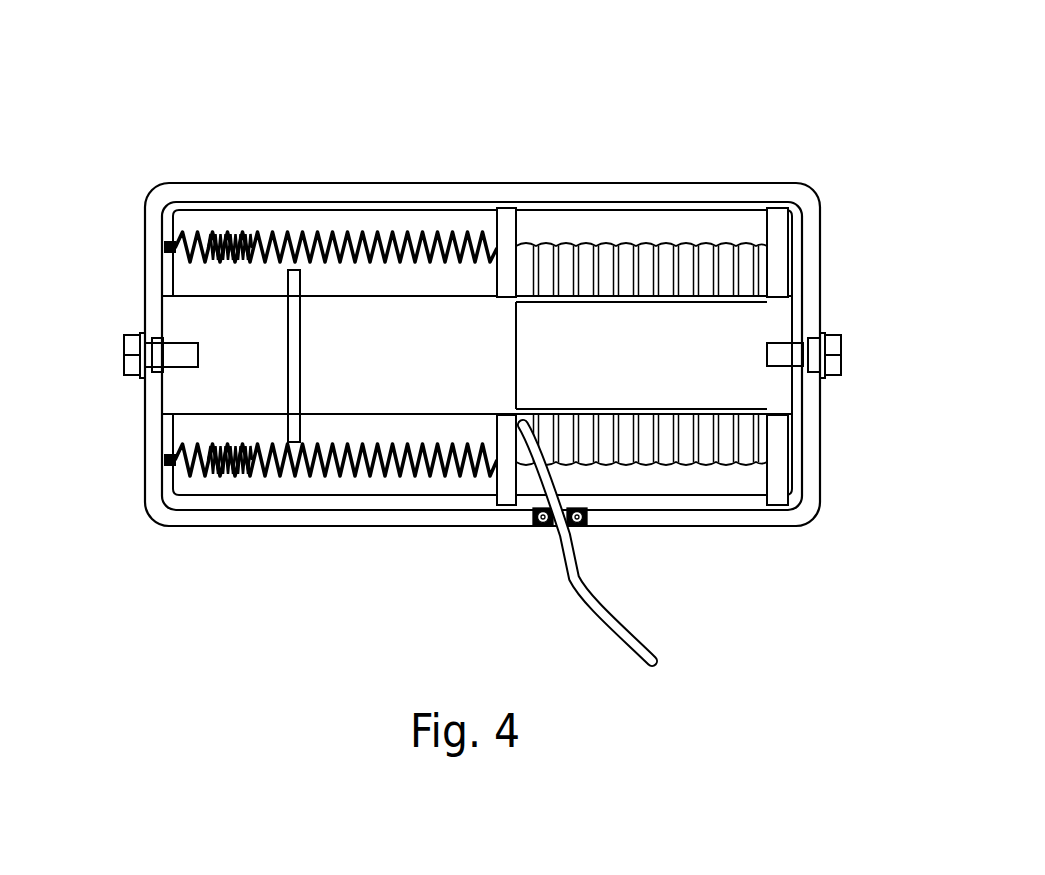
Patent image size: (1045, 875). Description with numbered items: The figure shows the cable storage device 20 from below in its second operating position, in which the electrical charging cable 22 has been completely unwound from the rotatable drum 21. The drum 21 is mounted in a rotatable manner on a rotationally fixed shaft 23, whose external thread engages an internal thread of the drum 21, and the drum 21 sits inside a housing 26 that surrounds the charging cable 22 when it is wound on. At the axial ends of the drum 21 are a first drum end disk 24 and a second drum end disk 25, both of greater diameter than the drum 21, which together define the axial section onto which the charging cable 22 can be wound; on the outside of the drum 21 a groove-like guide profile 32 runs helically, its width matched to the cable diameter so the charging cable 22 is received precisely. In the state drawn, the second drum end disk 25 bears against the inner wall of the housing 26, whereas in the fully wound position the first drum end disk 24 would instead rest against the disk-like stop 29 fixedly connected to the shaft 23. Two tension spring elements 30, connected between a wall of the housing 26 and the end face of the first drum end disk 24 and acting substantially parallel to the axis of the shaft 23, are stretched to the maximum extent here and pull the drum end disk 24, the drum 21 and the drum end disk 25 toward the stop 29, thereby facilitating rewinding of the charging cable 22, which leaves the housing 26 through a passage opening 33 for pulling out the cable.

The cable storage device 20 is at (752, 82).
The rotatable drum 21 is at (637, 238).
The electrical charging cable 22 is at (570, 588).
The rotationally fixed shaft 23 is at (178, 390).
The first drum end disk 24 is at (508, 493).
The second drum end disk 25 is at (780, 492).
The housing 26 is at (810, 473).
The disk-like stop 29 is at (293, 328).
The tension spring element 30 is at (340, 237).
The groove-like guide profile 32 is at (652, 453).
The passage opening 33 is at (587, 522).